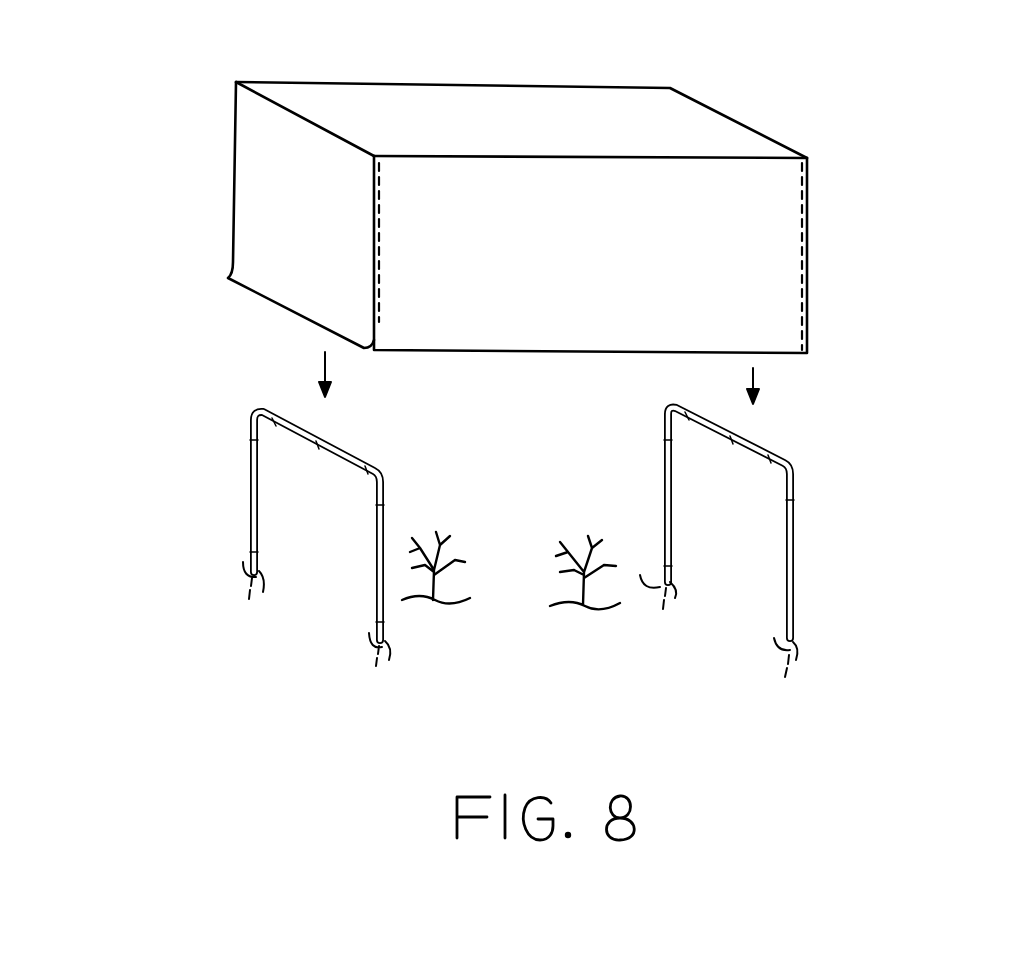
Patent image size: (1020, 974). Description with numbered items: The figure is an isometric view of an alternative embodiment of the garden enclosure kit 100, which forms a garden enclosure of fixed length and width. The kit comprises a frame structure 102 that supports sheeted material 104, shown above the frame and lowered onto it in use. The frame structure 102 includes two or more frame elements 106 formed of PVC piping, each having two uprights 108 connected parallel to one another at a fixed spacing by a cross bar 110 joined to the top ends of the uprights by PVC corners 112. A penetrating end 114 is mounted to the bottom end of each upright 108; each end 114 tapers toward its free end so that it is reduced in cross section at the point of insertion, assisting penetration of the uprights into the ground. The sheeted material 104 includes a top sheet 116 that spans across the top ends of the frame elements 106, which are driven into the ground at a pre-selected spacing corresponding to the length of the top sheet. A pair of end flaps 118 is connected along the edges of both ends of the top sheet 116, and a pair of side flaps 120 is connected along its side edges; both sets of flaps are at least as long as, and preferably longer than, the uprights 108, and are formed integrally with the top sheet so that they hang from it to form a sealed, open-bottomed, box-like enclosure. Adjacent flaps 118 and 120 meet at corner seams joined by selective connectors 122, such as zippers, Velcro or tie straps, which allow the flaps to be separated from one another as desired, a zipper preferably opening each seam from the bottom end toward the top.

The garden enclosure kit 100 is at (490, 367).
The frame structure 102 is at (252, 536).
The sheeted material 104 is at (521, 228).
The frame element 106 is at (585, 554).
The upright 108 is at (532, 531).
The cross bar 110 is at (574, 433).
The PVC corner 112 is at (540, 438).
The penetrating end 114 is at (527, 623).
The top sheet 116 is at (521, 95).
The end flap 118 is at (255, 215).
The side flap 120 is at (590, 289).
The selective connector 122 is at (642, 256).